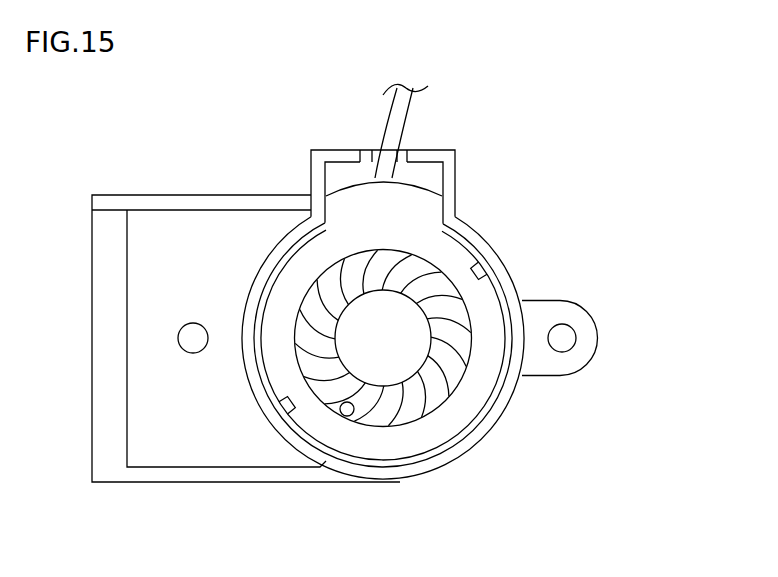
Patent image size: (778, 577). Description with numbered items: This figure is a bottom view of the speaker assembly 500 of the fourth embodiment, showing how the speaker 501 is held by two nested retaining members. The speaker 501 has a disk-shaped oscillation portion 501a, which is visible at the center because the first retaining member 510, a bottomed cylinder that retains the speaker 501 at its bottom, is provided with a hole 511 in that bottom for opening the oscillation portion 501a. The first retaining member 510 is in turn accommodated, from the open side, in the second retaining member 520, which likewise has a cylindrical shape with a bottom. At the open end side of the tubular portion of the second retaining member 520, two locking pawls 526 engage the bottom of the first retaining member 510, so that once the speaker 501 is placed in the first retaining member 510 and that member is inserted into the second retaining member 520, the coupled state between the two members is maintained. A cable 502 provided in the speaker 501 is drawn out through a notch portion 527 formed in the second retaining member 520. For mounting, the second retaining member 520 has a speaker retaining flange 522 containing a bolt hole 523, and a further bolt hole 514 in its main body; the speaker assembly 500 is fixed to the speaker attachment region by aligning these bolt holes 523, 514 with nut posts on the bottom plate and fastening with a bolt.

The speaker assembly 500 is at (498, 204).
The speaker 501 is at (449, 308).
The oscillation portion 501a is at (428, 266).
The cable 502 is at (409, 115).
The first retaining member 510 is at (392, 432).
The hole 511 is at (353, 417).
The bolt hole 514 is at (198, 323).
The second retaining member 520 is at (485, 428).
The speaker retaining flange 522 is at (598, 355).
The bolt hole 523 is at (574, 328).
The locking pawl 526 is at (491, 262).
The notch portion 527 is at (368, 160).